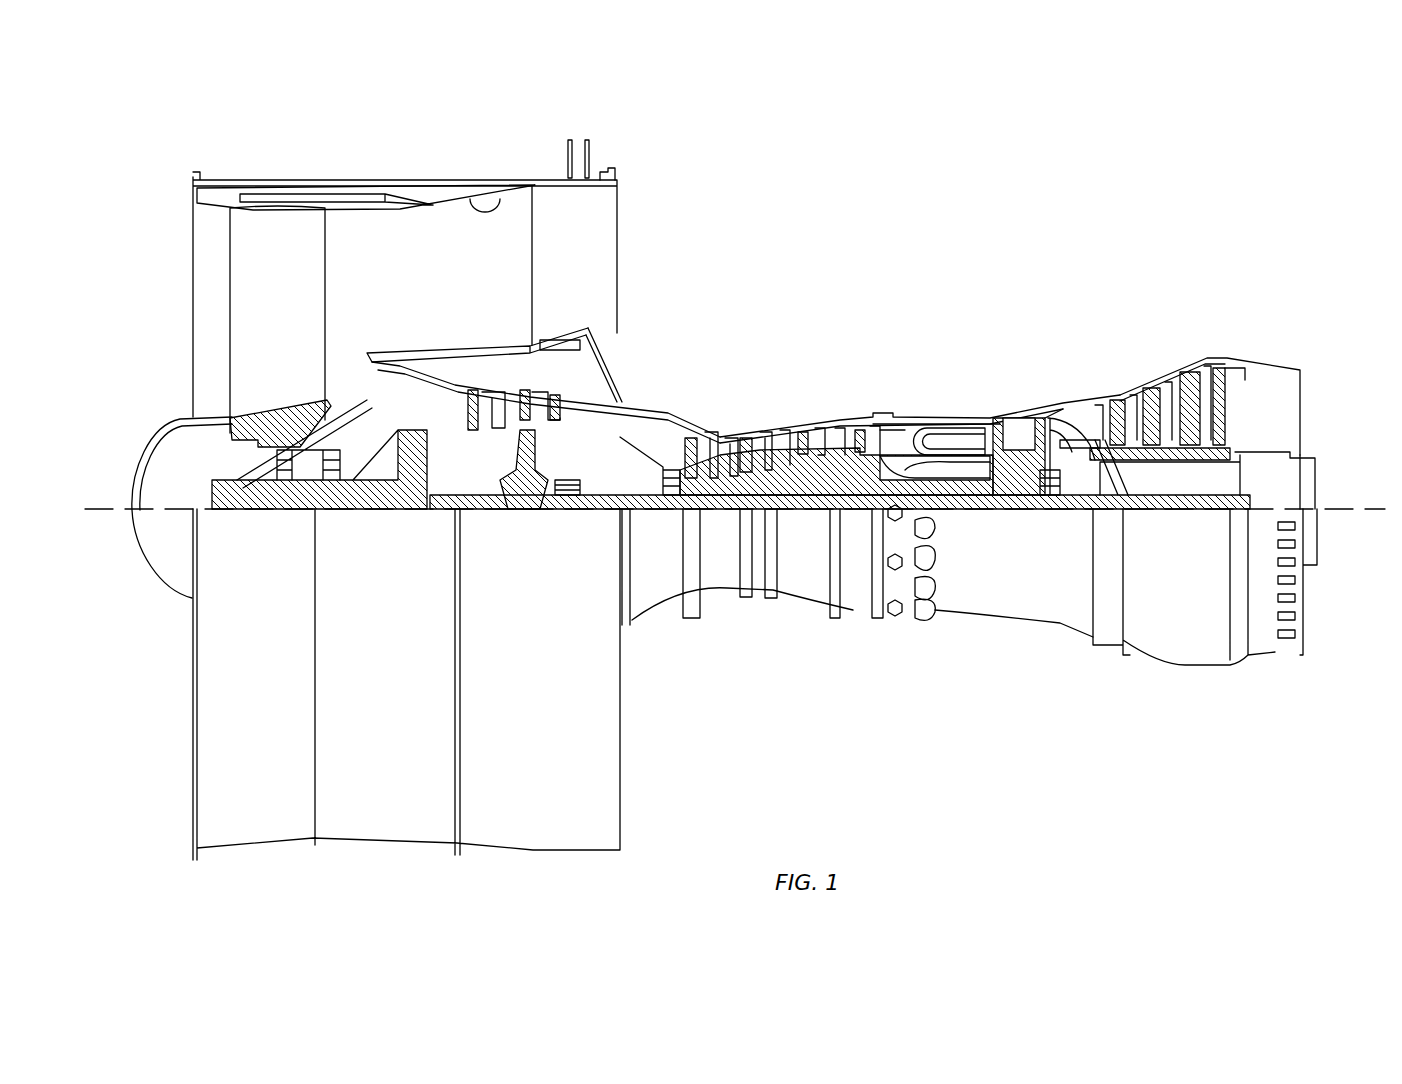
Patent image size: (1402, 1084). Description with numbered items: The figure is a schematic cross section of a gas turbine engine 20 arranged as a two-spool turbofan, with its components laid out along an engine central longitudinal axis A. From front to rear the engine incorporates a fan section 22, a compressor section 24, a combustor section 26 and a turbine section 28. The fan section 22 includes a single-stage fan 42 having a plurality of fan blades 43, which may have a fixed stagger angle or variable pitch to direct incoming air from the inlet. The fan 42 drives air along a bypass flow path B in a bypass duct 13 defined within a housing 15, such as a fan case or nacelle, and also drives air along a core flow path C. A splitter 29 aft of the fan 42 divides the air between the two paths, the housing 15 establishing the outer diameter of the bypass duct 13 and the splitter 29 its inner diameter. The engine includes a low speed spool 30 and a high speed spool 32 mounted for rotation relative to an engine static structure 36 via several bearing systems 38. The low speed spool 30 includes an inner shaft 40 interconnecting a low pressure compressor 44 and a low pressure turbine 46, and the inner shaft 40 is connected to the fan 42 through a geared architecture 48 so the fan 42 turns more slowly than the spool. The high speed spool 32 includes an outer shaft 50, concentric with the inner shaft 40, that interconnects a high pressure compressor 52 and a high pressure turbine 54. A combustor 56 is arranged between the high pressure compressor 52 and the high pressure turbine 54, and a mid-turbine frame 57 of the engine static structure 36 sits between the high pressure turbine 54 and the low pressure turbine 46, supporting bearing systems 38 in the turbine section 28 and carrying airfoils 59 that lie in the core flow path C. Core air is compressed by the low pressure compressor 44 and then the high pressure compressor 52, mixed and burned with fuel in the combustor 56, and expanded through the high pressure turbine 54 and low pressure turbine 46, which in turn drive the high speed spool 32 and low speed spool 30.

The gas turbine engine 20 is at (978, 212).
The fan section 22 is at (335, 170).
The compressor section 24 is at (670, 410).
The combustor section 26 is at (920, 402).
The turbine section 28 is at (1115, 350).
The bypass duct 13 is at (490, 198).
The housing 15 is at (412, 182).
The splitter 29 is at (380, 350).
The low speed spool 30 is at (812, 515).
The high speed spool 32 is at (860, 474).
The engine static structure 36 is at (853, 618).
The bearing systems 38 is at (570, 505).
The inner shaft 40 is at (640, 515).
The fan 42 is at (282, 310).
The fan blades 43 is at (314, 320).
The low pressure compressor 44 is at (540, 396).
The low pressure turbine 46 is at (1165, 385).
The geared architecture 48 is at (412, 500).
The outer shaft 50 is at (970, 502).
The high pressure compressor 52 is at (778, 440).
The high pressure turbine 54 is at (1025, 412).
The combustor 56 is at (945, 440).
The mid-turbine frame 57 is at (1068, 405).
The airfoils 59 is at (1100, 455).
The engine central longitudinal axis A is at (1372, 507).
The bypass flow path B is at (362, 247).
The core flow path C is at (405, 385).